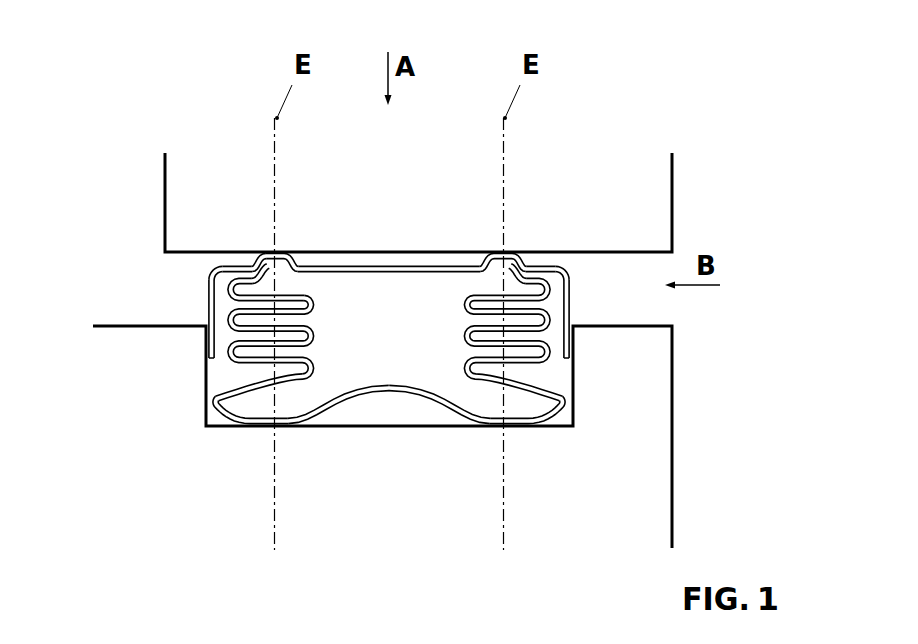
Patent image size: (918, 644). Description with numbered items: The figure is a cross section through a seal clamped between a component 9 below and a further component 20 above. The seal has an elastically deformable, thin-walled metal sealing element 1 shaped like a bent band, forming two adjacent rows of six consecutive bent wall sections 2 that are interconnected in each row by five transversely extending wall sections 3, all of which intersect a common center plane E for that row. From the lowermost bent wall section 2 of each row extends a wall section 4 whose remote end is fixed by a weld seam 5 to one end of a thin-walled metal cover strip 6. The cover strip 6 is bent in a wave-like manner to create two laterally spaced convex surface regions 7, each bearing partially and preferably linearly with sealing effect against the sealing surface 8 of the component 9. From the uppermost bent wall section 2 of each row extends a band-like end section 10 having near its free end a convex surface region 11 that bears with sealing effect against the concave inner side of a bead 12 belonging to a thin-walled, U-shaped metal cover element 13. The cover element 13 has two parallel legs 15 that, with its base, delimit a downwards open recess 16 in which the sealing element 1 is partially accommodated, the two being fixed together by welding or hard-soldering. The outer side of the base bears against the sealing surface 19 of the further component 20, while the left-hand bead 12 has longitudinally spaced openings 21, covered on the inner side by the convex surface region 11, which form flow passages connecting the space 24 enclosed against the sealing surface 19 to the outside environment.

The sealing element 1 is at (402, 352).
The bent wall sections 2 is at (216, 319).
The transversely extending wall sections 3 is at (250, 303).
The wall section 4 is at (240, 385).
The weld seam 5 is at (198, 403).
The cover strip 6 is at (355, 415).
The convex surface regions 7 is at (232, 424).
The sealing surface 8 is at (432, 424).
The component 9 is at (676, 508).
The end section 10 is at (240, 270).
The convex surface region 11 is at (284, 257).
The bead 12 is at (260, 256).
The cover element 13 is at (194, 274).
The legs 15 is at (209, 305).
The space or recess 16 is at (373, 340).
The sealing surface 19 is at (356, 253).
The further component 20 is at (676, 174).
The openings 21 is at (273, 254).
The space 24 is at (427, 257).